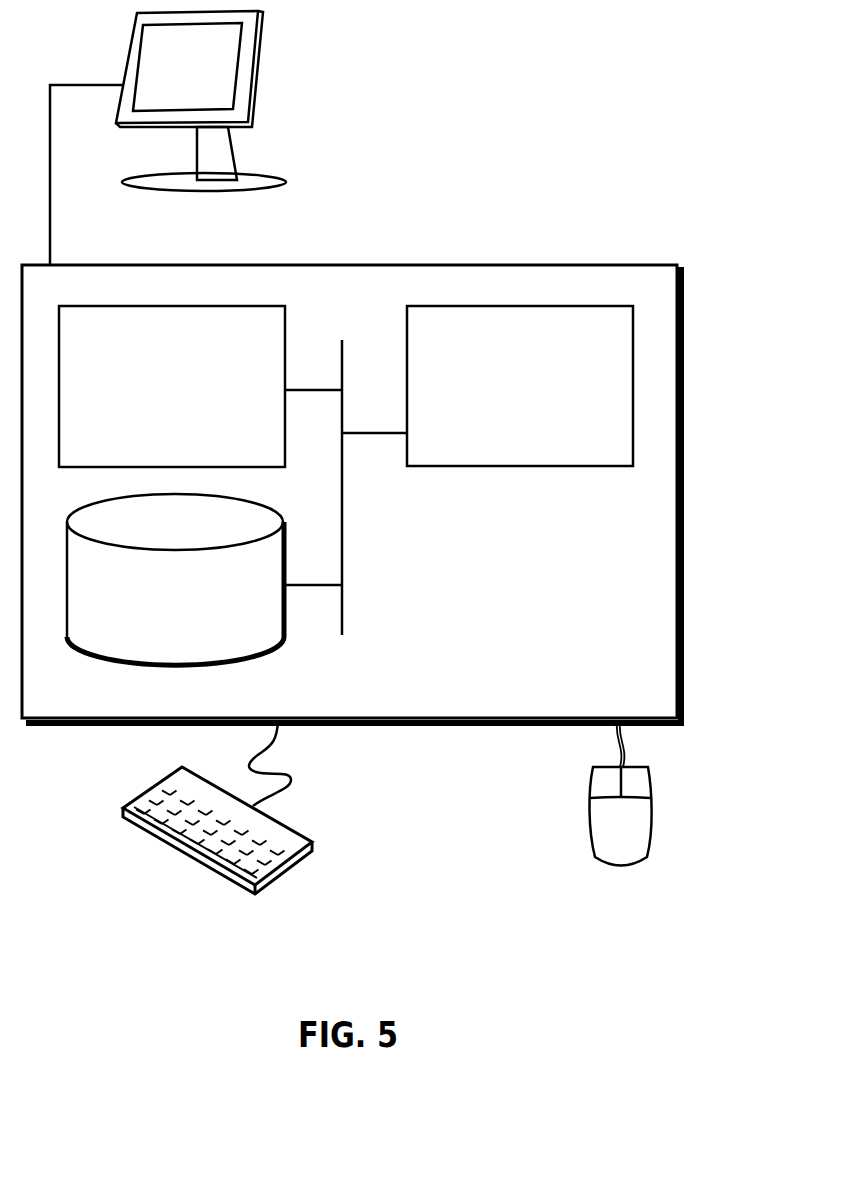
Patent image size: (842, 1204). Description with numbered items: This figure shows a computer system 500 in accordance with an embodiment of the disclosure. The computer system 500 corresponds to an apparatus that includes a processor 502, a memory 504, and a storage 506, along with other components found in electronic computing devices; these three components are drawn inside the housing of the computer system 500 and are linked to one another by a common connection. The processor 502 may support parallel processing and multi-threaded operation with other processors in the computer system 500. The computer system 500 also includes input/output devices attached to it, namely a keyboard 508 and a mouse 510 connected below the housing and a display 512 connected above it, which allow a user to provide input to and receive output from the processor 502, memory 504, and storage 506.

The computer system 500 is at (396, 240).
The processor 502 is at (545, 397).
The memory 504 is at (195, 397).
The storage 506 is at (201, 609).
The keyboard 508 is at (143, 832).
The mouse 510 is at (643, 840).
The display 512 is at (168, 138).